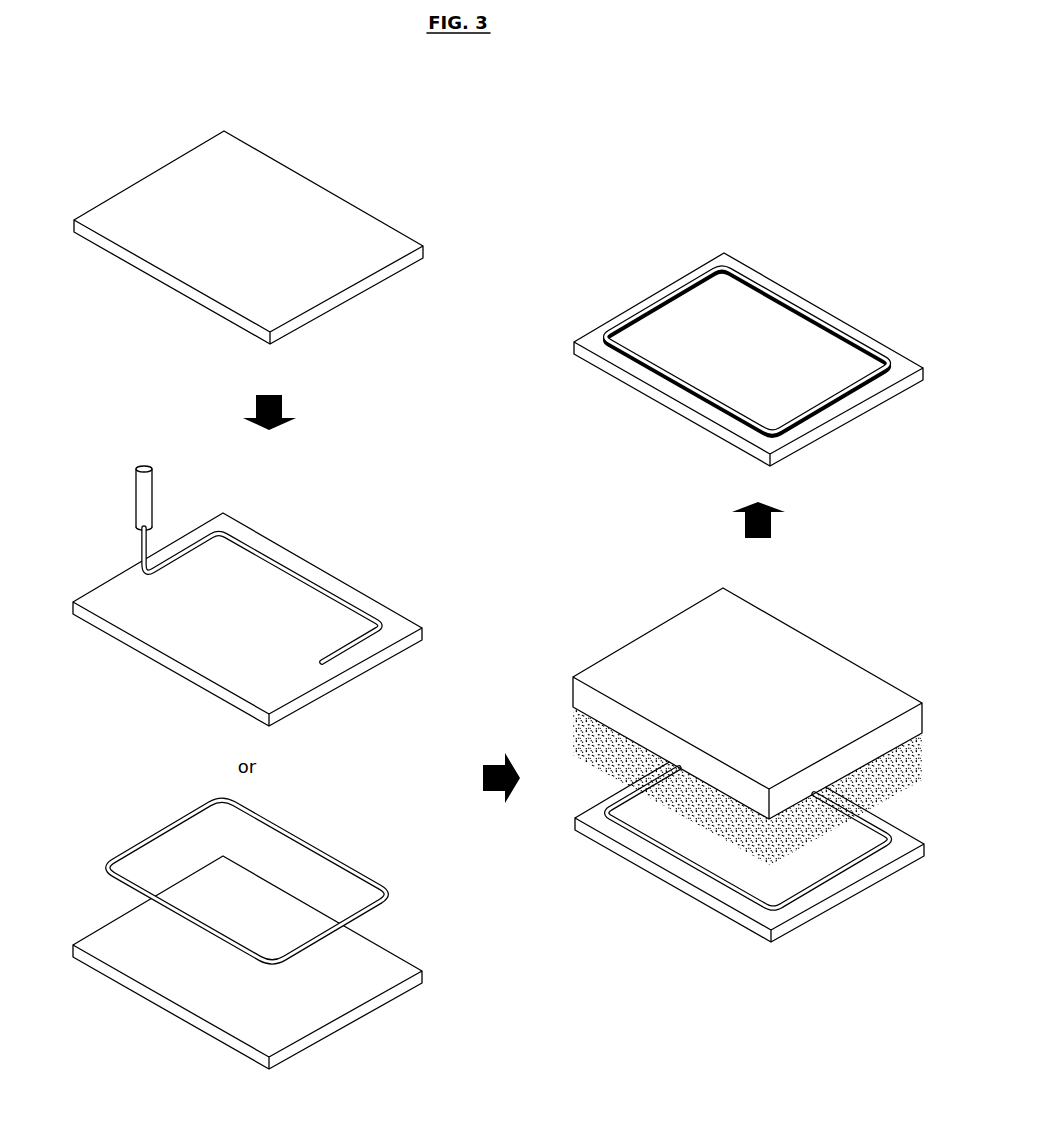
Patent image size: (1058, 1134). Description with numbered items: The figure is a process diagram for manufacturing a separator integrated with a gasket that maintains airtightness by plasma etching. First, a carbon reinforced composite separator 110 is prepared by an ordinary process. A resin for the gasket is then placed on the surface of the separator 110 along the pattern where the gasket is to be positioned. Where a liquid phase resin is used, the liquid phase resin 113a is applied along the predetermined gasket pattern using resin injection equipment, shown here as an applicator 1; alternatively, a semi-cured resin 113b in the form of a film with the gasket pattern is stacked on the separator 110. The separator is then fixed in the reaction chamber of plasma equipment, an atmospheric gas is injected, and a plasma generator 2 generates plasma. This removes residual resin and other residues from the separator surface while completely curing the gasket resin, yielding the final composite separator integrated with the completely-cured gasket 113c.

The separator 110 is at (320, 186).
The dispenser nozzle 1 is at (138, 498).
The plasma generator 2 is at (824, 638).
The liquid phase resin for gasket 113a is at (280, 562).
The semi-cured resin for gasket 113b is at (313, 845).
The completely-cured resin for gasket 113c is at (800, 310).